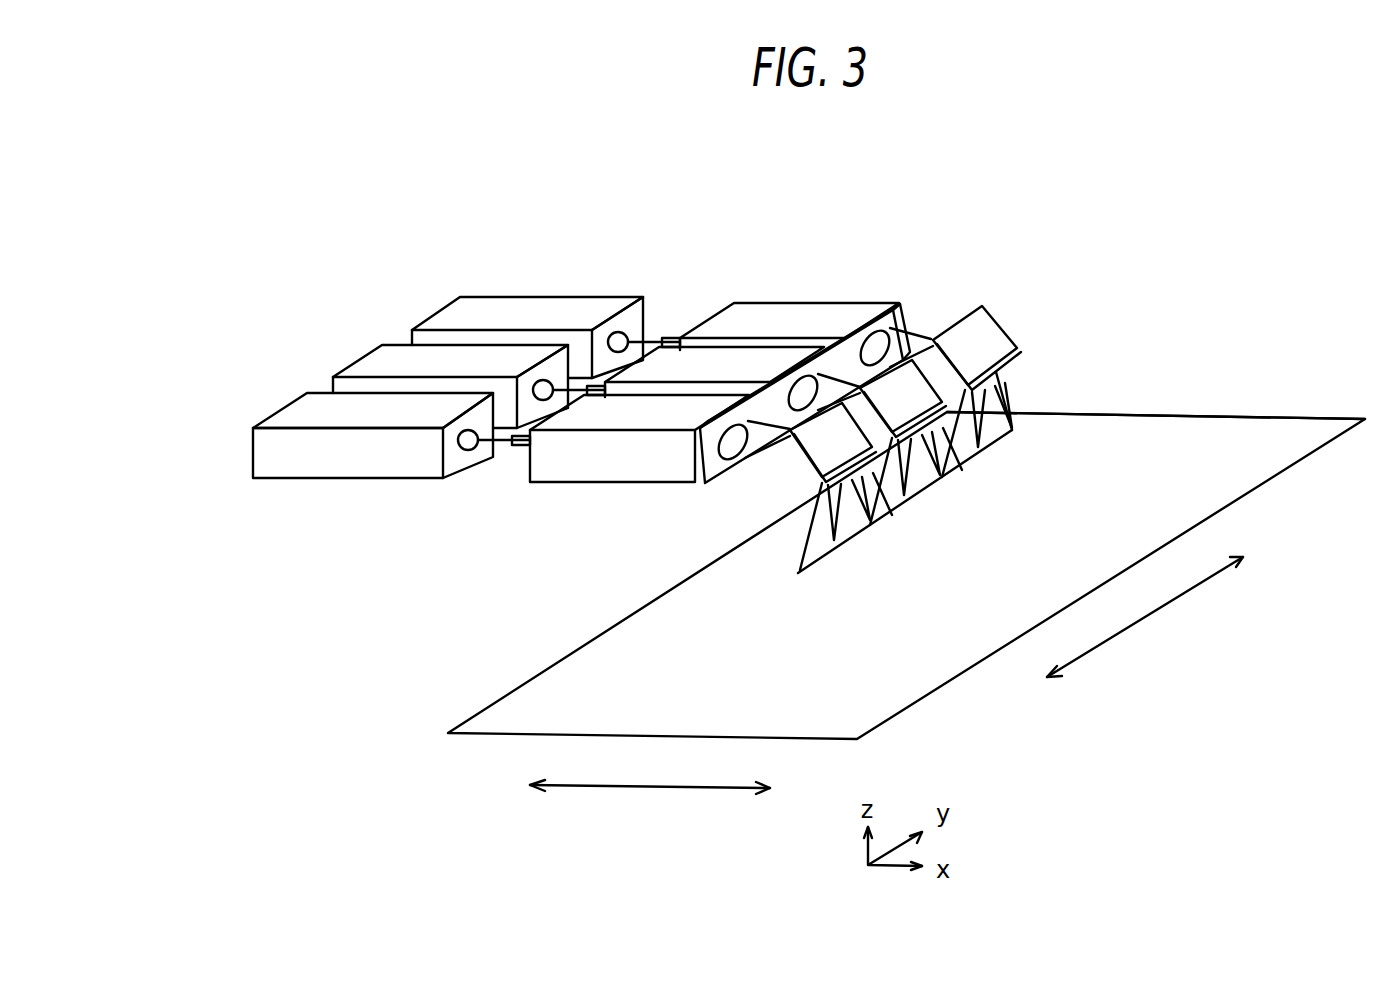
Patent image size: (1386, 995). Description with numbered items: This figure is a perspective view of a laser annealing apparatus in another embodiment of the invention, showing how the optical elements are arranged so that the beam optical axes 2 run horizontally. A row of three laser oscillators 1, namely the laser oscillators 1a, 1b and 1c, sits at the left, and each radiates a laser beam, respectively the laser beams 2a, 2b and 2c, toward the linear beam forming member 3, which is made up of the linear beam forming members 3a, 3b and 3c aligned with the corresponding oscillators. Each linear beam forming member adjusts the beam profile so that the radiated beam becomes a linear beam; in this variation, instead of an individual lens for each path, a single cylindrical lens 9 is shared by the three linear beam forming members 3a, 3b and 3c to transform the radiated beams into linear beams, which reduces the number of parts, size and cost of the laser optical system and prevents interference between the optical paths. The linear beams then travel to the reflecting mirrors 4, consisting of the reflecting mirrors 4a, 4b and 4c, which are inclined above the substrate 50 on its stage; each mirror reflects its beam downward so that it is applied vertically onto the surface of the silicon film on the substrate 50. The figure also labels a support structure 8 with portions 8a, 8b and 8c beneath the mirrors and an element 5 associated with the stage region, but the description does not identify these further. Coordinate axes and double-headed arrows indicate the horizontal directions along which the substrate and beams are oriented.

The laser oscillators 1 is at (500, 296).
The laser oscillator 1a is at (295, 408).
The laser oscillator 1b is at (373, 358).
The laser oscillator 1c is at (447, 312).
The beam optical axes 2 is at (662, 311).
The laser beam 2a is at (500, 445).
The laser beam 2b is at (580, 386).
The laser beam 2c is at (672, 348).
The linear beam forming member 3 is at (806, 268).
The linear beam forming member 3a is at (613, 468).
The linear beam forming member 3b is at (753, 352).
The linear beam forming member 3c is at (848, 312).
The cylindrical lens 9 is at (906, 310).
The reflecting mirrors 4 is at (1020, 330).
The reflecting mirror 4a is at (807, 472).
The reflecting mirror 4b is at (948, 340).
The reflecting mirror 4c is at (987, 318).
The plate support 8 is at (1017, 400).
The first support leg 8a is at (850, 540).
The second support leg 8b is at (928, 495).
The third support leg 8c is at (992, 442).
The stage 5 is at (1270, 437).
The substrate 50 is at (1177, 435).